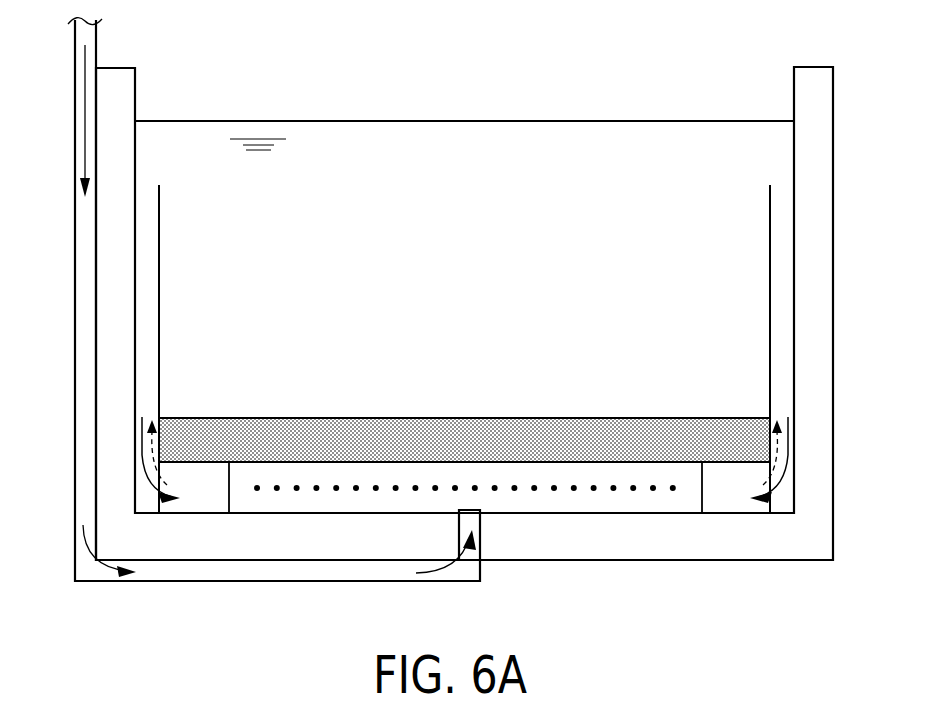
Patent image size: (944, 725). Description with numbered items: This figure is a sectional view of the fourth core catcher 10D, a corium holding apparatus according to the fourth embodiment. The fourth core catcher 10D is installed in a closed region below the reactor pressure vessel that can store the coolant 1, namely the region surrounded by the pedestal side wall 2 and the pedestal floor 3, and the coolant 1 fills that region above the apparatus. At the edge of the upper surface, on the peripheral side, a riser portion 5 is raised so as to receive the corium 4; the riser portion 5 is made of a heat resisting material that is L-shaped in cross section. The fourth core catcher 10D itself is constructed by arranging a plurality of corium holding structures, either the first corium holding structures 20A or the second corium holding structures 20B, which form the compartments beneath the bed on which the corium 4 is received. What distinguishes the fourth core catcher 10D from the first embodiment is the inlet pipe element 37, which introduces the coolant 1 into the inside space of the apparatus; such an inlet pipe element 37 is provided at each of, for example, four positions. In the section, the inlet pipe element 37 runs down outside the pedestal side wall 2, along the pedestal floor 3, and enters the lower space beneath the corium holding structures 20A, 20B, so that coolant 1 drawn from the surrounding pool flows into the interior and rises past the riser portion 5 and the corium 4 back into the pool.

The coolant 1 is at (584, 144).
The pedestal side wall 2 is at (833, 155).
The pedestal floor 3 is at (607, 548).
The corium 4 is at (522, 428).
The riser portion 5 is at (770, 296).
The fourth core catcher 10D is at (171, 236).
The first corium holding structure 20A is at (482, 536).
The second corium holding structure 20B is at (729, 500).
The inlet pipe element 37 is at (75, 228).